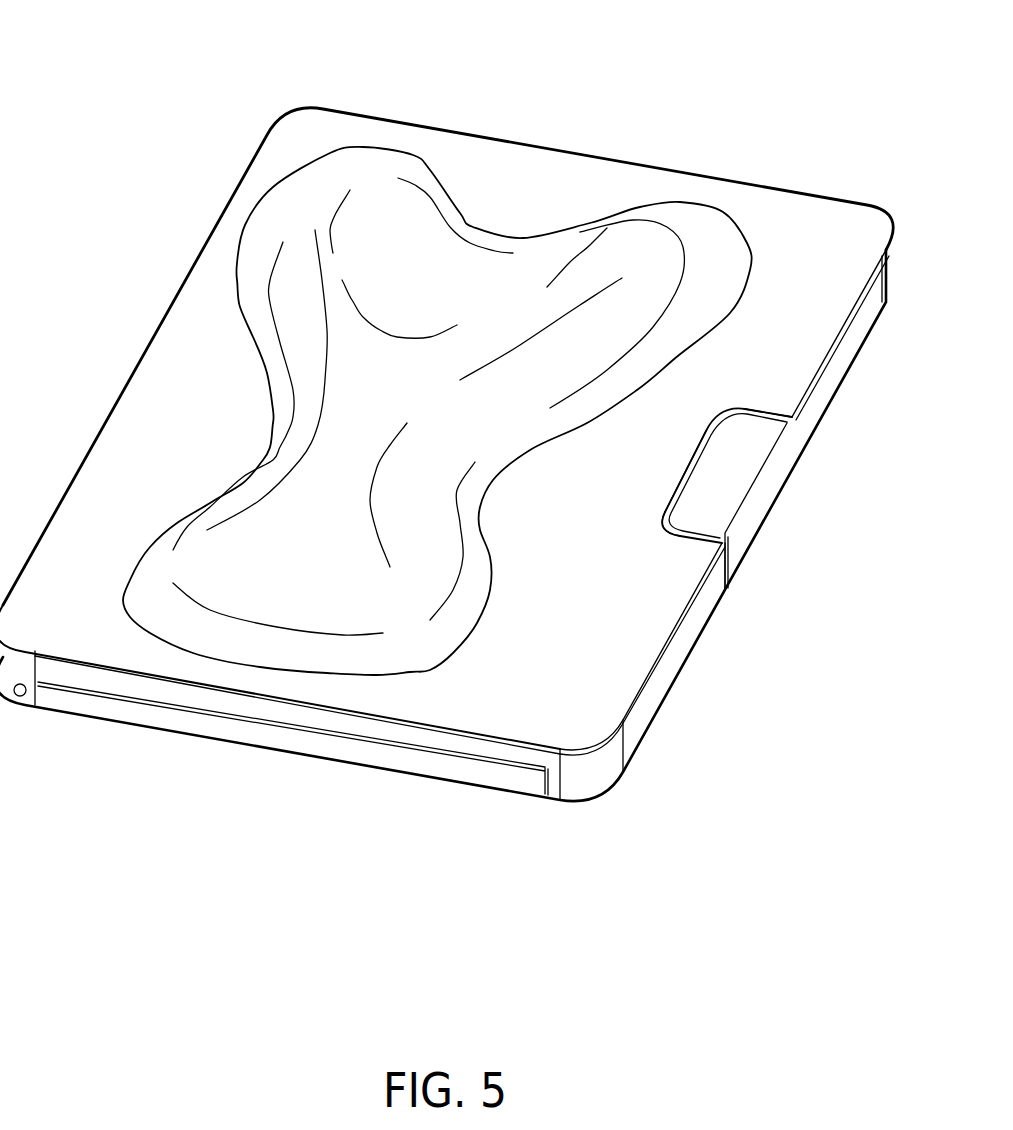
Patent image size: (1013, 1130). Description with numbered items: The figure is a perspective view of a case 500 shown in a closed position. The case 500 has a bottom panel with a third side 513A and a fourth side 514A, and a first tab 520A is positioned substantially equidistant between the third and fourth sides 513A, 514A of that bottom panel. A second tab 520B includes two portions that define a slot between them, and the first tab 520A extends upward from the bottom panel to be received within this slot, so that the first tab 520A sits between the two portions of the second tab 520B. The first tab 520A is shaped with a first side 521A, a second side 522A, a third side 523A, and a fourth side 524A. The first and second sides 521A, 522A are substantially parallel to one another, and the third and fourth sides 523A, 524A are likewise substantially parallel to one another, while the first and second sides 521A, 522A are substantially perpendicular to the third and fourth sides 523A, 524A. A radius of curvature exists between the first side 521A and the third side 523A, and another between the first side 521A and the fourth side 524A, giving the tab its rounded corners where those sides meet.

The case 500 is at (100, 106).
The fourth side 514A is at (812, 195).
The third side 513A is at (470, 771).
The first tab 520A is at (718, 497).
The second tab 520B is at (827, 392).
The first side 521A is at (690, 470).
The second side 522A is at (740, 548).
The third side 523A is at (692, 542).
The fourth side 524A is at (757, 410).